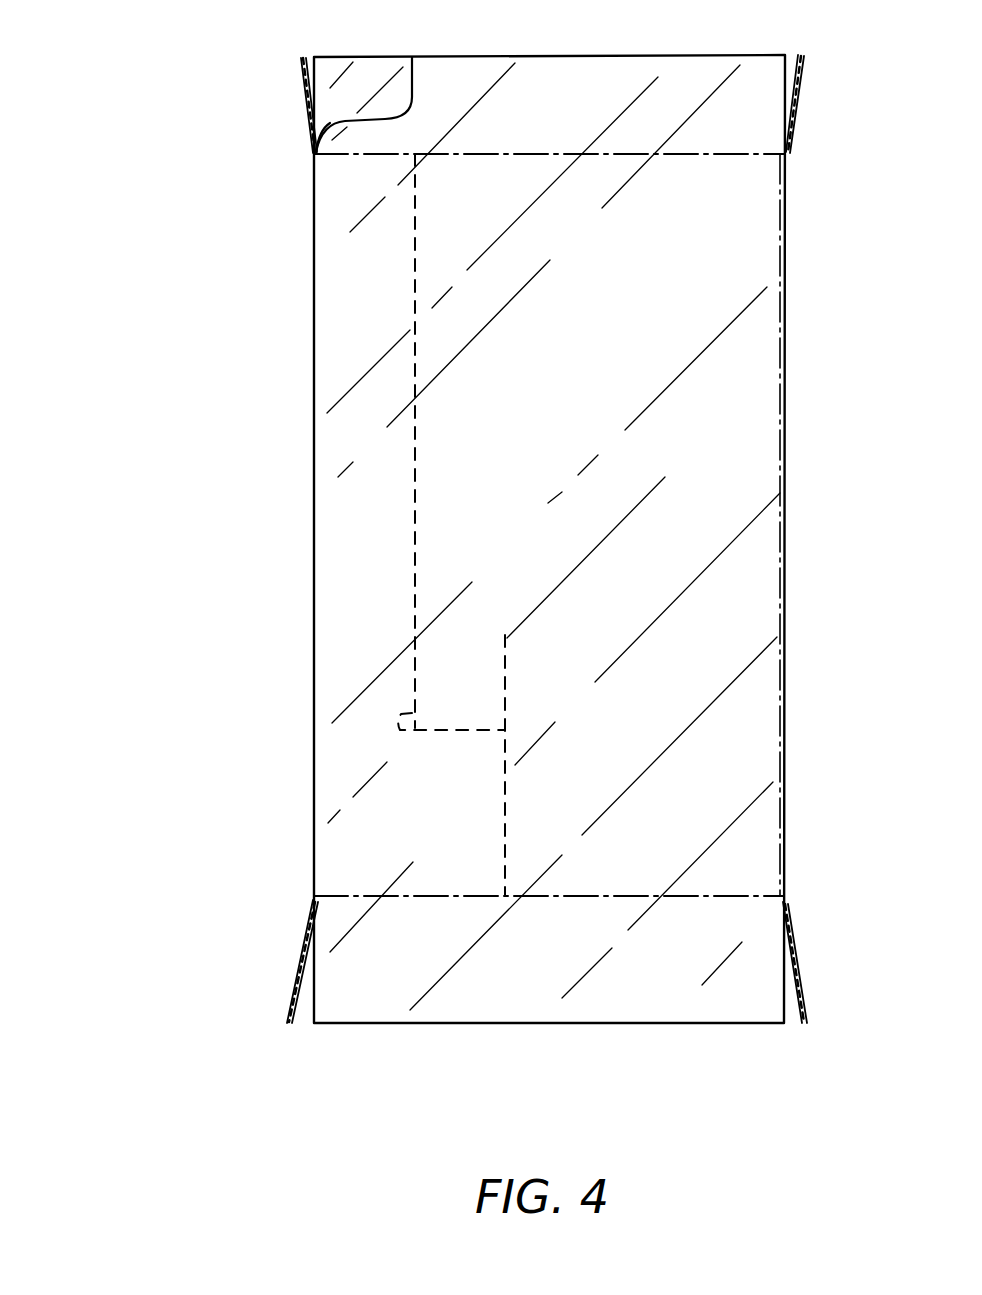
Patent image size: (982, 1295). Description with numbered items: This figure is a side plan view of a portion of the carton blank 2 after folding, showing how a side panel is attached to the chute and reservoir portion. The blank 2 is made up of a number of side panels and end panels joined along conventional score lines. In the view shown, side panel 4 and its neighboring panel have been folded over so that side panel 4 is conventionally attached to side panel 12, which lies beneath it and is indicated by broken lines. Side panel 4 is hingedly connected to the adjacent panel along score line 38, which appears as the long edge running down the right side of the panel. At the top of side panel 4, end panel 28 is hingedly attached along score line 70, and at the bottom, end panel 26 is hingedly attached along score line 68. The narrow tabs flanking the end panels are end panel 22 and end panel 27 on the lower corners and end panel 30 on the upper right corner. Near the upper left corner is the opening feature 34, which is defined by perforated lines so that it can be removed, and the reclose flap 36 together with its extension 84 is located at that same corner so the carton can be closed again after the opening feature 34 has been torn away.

The blank 2 is at (165, 578).
The side panel 4 is at (560, 446).
The side panel 12 is at (345, 512).
The end panel 22 is at (296, 967).
The end panel 26 is at (518, 985).
The end panel 27 is at (797, 975).
The end panel 28 is at (557, 114).
The end panel 30 is at (792, 108).
The opening feature 34 is at (332, 58).
The reclose flap 36 is at (310, 113).
The score line 38 is at (782, 381).
The score line 68 is at (643, 897).
The score line 70 is at (445, 160).
The extension 84 is at (300, 61).